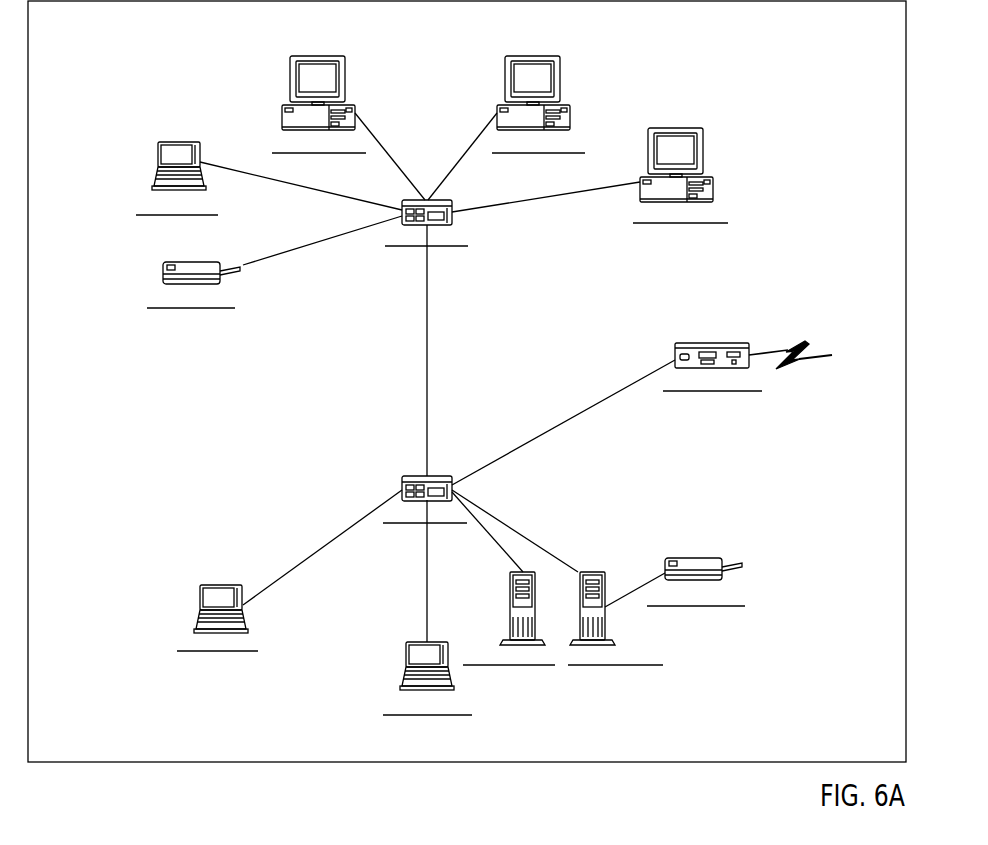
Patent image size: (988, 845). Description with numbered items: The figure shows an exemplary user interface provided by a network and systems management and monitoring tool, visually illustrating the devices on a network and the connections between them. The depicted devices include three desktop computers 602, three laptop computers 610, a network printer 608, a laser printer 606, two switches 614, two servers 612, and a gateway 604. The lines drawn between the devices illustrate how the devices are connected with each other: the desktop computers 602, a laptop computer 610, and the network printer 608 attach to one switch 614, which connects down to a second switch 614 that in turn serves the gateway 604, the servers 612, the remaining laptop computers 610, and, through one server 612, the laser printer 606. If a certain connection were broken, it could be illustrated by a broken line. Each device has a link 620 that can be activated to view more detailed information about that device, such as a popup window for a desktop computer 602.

The desktop computer 602 is at (340, 57).
The gateway 604 is at (722, 343).
The laser printer 606 is at (705, 558).
The network printer 608 is at (208, 262).
The laptop computer 610 is at (180, 142).
The server 612 is at (508, 580).
The switch 614 is at (452, 203).
The link 620 is at (345, 158).